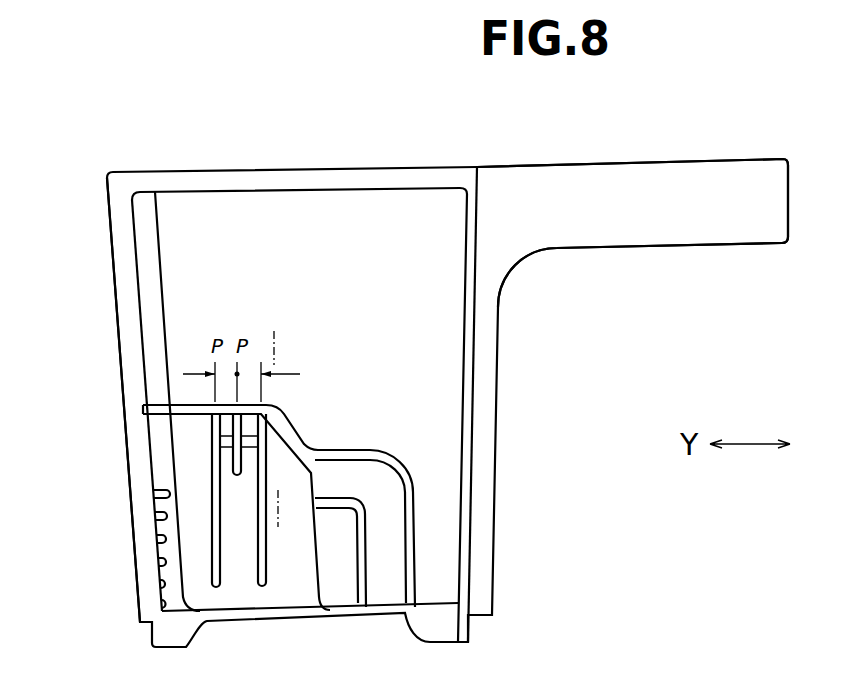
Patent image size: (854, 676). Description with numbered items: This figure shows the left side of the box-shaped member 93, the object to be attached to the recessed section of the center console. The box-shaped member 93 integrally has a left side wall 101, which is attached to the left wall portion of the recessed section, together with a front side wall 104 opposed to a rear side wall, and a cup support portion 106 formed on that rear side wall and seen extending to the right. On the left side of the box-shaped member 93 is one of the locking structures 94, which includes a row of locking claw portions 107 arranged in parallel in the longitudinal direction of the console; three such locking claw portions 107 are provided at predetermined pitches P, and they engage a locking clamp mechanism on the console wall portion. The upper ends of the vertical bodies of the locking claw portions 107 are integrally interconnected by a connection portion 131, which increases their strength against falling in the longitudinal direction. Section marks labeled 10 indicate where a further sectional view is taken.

The box-shaped member 93 is at (237, 132).
The left side wall 101 is at (371, 222).
The front side wall 104 is at (113, 289).
The cup support portion 106 is at (672, 160).
The locking claw portions 107 is at (217, 420).
The connection portion 131 is at (203, 403).
The locking structures 94 is at (195, 495).
The section line of FIG. 10 is at (327, 331).